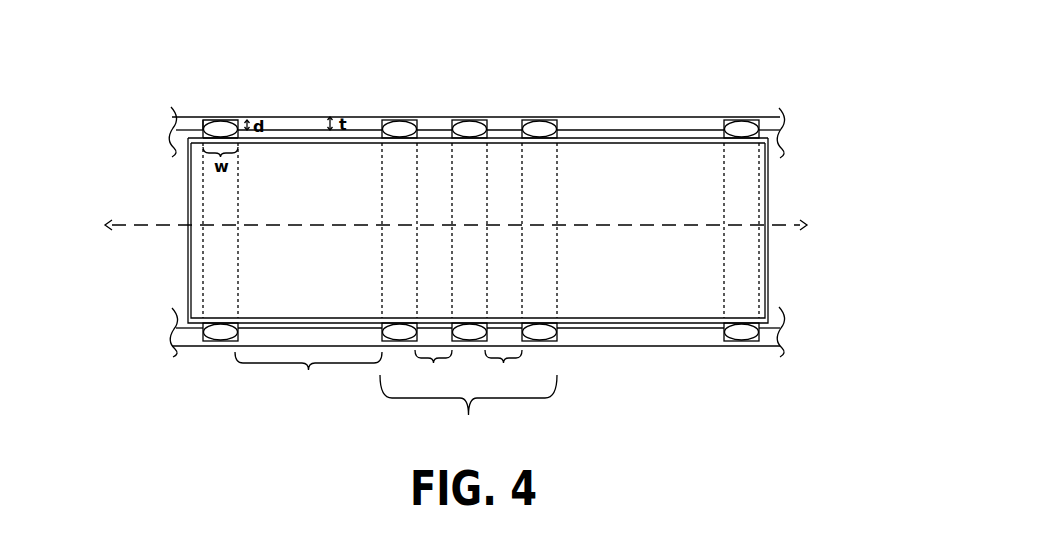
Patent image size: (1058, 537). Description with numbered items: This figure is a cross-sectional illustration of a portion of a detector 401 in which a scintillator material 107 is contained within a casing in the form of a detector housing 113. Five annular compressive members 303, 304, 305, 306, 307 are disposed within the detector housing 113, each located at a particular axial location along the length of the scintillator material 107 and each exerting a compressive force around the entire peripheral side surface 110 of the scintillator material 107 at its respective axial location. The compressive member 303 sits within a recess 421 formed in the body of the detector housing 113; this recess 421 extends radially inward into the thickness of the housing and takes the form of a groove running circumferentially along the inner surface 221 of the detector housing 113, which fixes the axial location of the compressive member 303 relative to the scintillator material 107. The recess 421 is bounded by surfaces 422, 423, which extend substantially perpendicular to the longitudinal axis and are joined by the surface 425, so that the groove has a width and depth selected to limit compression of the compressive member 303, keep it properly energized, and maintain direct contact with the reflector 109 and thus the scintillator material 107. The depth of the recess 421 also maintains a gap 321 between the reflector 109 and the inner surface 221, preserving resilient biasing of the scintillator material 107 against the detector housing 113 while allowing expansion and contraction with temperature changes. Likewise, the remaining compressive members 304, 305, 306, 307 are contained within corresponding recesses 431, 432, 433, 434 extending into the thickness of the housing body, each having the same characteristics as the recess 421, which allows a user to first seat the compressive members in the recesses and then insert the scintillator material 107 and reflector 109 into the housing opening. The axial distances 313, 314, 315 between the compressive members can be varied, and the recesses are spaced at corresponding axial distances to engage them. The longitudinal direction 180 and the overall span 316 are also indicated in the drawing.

The detector 401 is at (420, 185).
The detector housing 113 is at (766, 120).
The inner surface 221 is at (637, 330).
The gap 321 is at (290, 137).
The reflector 109 is at (320, 143).
The peripheral side surface 110 is at (638, 145).
The scintillator material 107 is at (697, 201).
The surface 425 is at (238, 150).
The recess 421 is at (200, 118).
The surface 422 is at (205, 126).
The surface 423 is at (233, 131).
The compressive member 303 is at (233, 138).
The compressive member 304 is at (391, 119).
The compressive member 305 is at (482, 120).
The compressive member 306 is at (556, 130).
The compressive member 307 is at (726, 121).
The recess 431 is at (400, 118).
The recess 432 is at (470, 118).
The recess 433 is at (540, 118).
The recess 434 is at (742, 119).
The longitudinal direction 180 is at (775, 225).
The axial distance 313 is at (308, 374).
The axial distance 314 is at (435, 367).
The axial distance 315 is at (504, 367).
The second bump region 316 is at (468, 406).